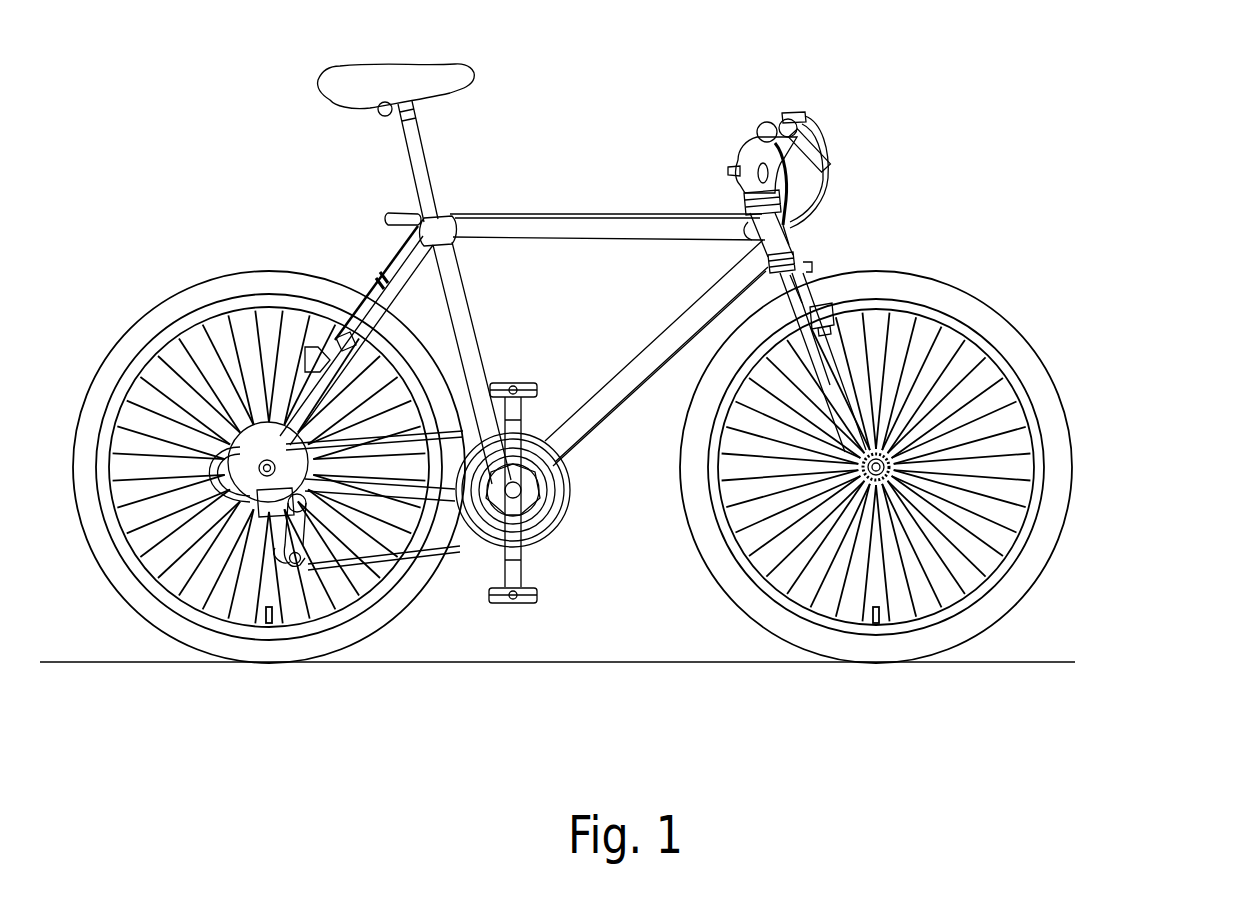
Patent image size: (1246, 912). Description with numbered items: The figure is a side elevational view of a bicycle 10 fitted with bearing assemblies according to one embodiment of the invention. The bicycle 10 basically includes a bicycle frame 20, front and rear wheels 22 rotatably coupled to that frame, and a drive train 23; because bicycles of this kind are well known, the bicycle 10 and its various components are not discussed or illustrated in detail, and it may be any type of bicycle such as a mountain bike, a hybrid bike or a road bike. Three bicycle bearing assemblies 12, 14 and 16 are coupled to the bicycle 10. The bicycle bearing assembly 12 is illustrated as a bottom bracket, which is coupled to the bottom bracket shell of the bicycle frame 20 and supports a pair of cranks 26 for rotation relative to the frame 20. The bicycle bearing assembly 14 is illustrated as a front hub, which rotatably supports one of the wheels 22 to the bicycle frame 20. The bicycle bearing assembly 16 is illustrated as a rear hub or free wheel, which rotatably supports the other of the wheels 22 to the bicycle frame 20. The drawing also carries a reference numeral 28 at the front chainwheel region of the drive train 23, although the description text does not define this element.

The bicycle 10 is at (834, 113).
The bicycle bearing assembly 12 is at (553, 540).
The bicycle bearing assembly 14 is at (928, 477).
The bicycle bearing assembly 16 is at (210, 380).
The bicycle frame 20 is at (573, 215).
The front and rear wheels 22 is at (268, 272).
The drive train 23 is at (580, 516).
The cranks 26 is at (537, 414).
The front chainwheel 28 is at (572, 475).